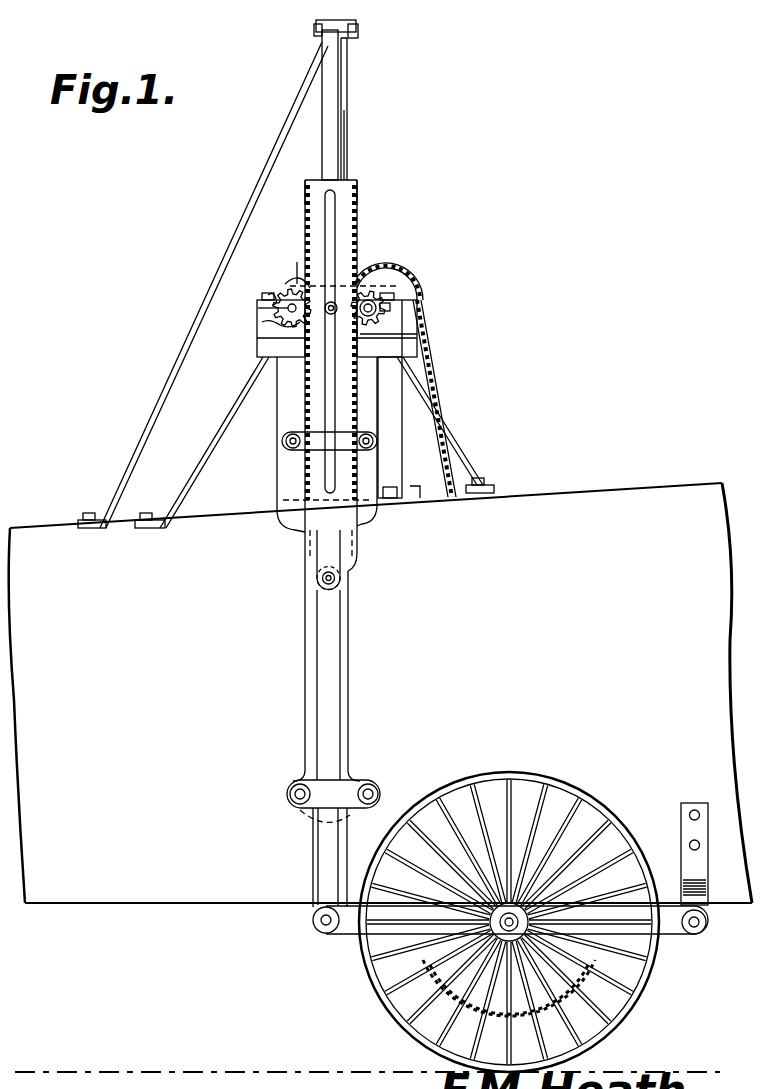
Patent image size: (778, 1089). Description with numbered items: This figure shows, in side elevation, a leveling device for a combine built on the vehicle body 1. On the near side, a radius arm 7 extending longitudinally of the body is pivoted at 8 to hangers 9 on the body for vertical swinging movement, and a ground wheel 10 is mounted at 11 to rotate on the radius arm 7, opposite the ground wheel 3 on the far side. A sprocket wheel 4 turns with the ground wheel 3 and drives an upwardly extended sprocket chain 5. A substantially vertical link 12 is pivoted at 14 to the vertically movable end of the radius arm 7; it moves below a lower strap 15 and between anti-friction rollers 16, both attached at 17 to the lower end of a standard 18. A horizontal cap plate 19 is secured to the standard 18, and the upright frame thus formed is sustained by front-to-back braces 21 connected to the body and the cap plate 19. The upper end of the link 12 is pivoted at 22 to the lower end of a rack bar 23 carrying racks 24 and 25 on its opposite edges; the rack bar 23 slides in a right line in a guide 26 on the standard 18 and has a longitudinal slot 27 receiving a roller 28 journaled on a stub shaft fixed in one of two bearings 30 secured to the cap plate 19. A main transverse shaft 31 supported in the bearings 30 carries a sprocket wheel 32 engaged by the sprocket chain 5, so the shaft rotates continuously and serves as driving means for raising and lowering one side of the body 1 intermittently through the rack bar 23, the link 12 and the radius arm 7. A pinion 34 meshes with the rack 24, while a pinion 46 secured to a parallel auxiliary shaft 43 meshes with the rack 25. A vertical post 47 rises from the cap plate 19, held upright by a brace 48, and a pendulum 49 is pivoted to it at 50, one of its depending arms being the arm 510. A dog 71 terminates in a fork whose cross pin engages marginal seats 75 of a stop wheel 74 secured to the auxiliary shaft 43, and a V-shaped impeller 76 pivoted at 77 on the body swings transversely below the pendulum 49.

The body 1 is at (22, 905).
The ground wheel 3 is at (666, 440).
The sprocket wheel 4 is at (463, 1010).
The sprocket chain 5 is at (436, 407).
The radius arm 7 is at (684, 936).
The pivot 8 is at (706, 931).
The hangers 9 is at (700, 890).
The ground wheel 10 is at (366, 985).
The mounting 11 is at (513, 922).
The link 12 is at (312, 850).
The pivot 14 is at (320, 930).
The lower strap 15 is at (340, 785).
The anti-friction rollers 16 is at (336, 812).
The attachment 17 is at (373, 795).
The standard 18 is at (349, 652).
The cap plate 19 is at (258, 352).
The braces 21 is at (465, 462).
The pivot 22 is at (325, 581).
The rack bar 23 is at (350, 201).
The rack 24 is at (358, 241).
The rack 25 is at (305, 226).
The guide 26 is at (318, 447).
The longitudinal slot 27 is at (327, 490).
The roller 28 is at (327, 313).
The bearings 30 is at (395, 334).
The main transverse shaft 31 is at (376, 300).
The sprocket wheel 32 is at (386, 268).
The pinion 34 is at (392, 309).
The auxiliary shaft 43 is at (258, 308).
The pinion 46 is at (266, 326).
The post 47 is at (322, 146).
The brace 48 is at (246, 207).
The pendulum 49 is at (350, 60).
The pivot 50 is at (359, 31).
The pendulum arm 510 is at (348, 165).
The dog 71 is at (296, 262).
The stop wheel 74 is at (298, 291).
The marginal seats 75 is at (268, 298).
The impeller 76 is at (410, 445).
The pivot 77 is at (417, 498).